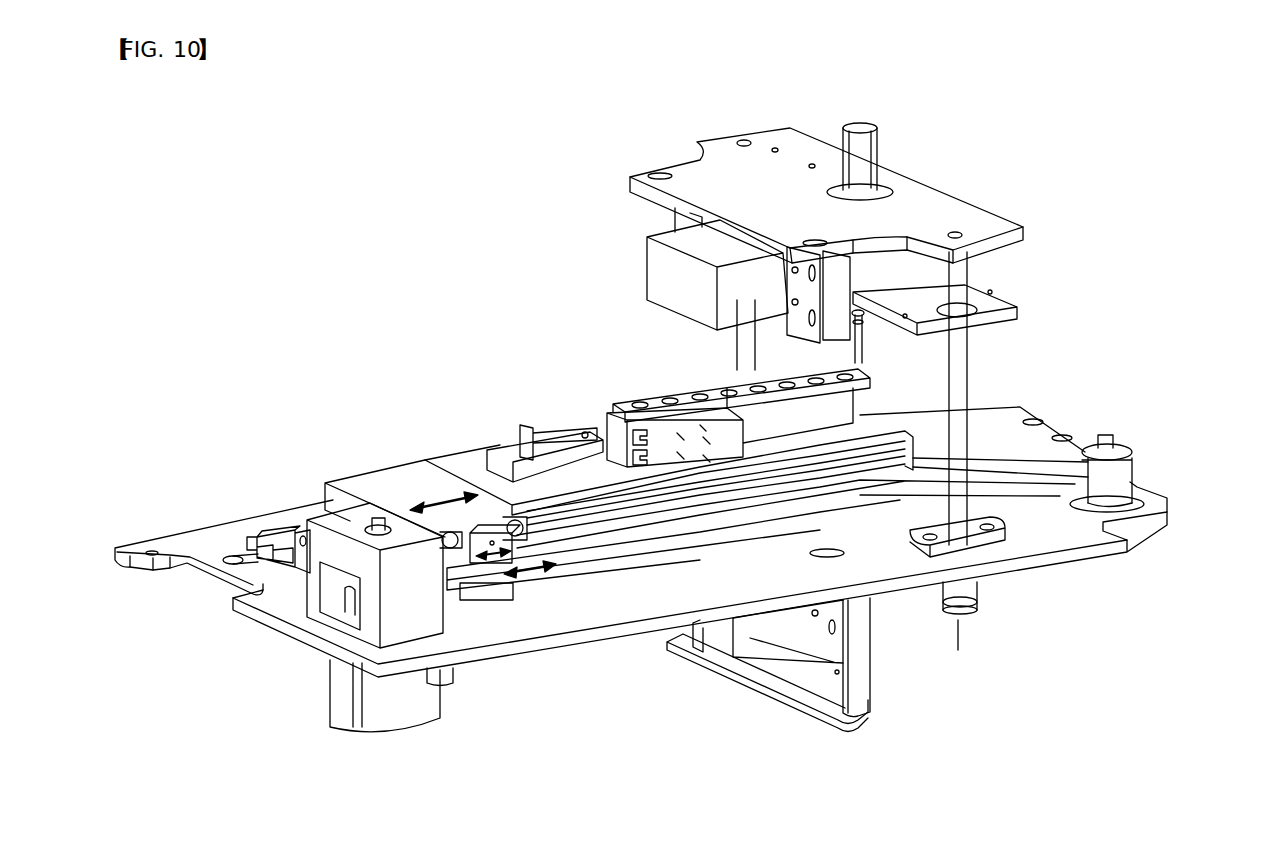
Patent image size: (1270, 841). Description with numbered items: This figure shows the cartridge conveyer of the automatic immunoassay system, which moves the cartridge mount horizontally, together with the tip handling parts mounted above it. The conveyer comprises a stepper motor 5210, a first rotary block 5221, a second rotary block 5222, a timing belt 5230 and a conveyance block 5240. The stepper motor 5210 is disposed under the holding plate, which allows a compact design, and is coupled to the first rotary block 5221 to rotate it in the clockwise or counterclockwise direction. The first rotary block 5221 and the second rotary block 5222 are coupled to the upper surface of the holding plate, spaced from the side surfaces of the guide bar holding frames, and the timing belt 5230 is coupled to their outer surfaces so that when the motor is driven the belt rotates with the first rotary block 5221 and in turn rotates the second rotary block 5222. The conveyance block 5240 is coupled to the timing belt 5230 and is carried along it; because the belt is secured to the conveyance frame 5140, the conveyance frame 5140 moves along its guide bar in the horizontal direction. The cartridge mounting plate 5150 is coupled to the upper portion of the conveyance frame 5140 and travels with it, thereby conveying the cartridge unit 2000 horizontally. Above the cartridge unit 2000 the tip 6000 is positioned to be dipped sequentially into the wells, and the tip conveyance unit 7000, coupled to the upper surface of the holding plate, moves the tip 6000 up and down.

The tip conveyance unit 7000 is at (740, 271).
The tip 6000 is at (868, 328).
The cartridge unit 2000 is at (660, 405).
The cartridge mounting plate 5150 is at (480, 465).
The conveyance frame 5140 is at (405, 488).
The second rotary block 5222 is at (1122, 487).
The first rotary block 5221 is at (358, 604).
The stepper motor 5210 is at (345, 675).
The conveyance block 5240 is at (490, 595).
The timing belt 5230 is at (597, 557).